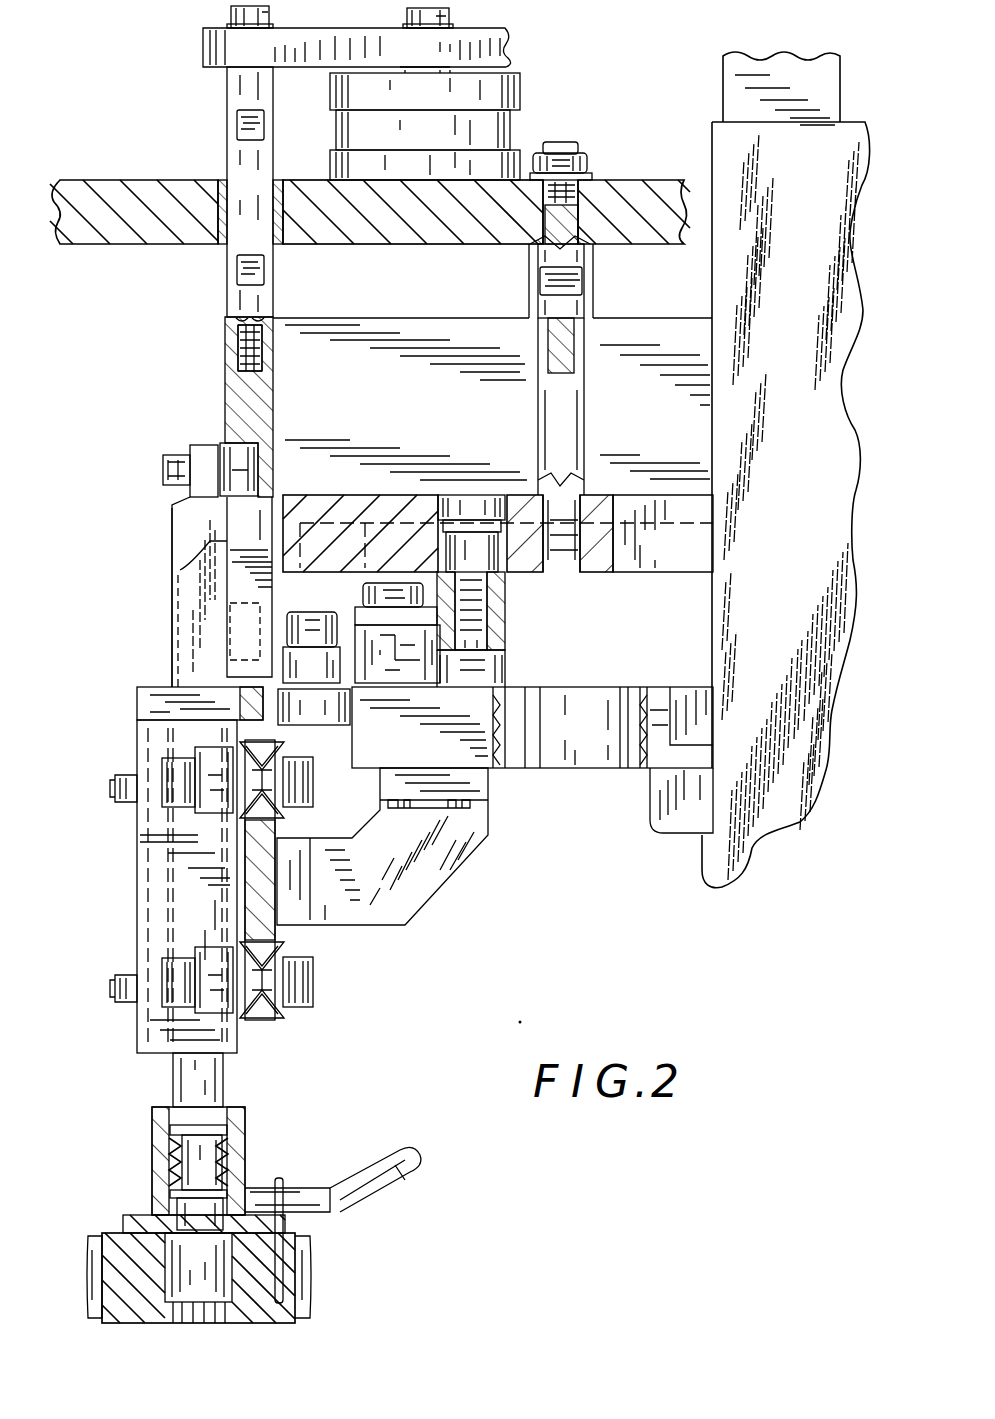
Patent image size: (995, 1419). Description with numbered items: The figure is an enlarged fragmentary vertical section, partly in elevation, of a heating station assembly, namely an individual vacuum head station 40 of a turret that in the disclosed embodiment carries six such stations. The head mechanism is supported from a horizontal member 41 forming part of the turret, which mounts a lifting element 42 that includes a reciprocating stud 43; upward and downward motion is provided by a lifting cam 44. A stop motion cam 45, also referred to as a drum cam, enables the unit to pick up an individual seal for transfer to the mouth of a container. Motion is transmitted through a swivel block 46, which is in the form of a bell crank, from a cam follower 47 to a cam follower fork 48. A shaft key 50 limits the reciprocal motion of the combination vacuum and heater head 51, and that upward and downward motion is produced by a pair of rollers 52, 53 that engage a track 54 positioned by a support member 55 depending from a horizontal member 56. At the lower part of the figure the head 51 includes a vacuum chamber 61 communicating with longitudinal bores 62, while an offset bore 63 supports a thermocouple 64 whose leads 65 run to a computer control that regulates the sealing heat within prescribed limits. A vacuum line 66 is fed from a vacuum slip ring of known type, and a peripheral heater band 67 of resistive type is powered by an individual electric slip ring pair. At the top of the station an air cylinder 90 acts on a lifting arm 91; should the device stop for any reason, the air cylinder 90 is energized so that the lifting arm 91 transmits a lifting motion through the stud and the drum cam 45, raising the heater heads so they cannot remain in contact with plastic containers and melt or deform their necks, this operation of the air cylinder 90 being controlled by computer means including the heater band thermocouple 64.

The vacuum head station 40 is at (516, 42).
The horizontal member 41 is at (640, 200).
The lifting element 42 is at (180, 572).
The reciprocating stud 43 is at (273, 412).
The lifting cam 44 is at (172, 655).
The stop motion cam 45 is at (334, 490).
The swivel block 46 is at (368, 596).
The cam follower 47 is at (492, 500).
The cam follower fork 48 is at (138, 700).
The shaft key 50 is at (140, 902).
The combination vacuum and heater head 51 is at (302, 1263).
The roller 52 is at (285, 752).
The roller 53 is at (290, 1020).
The track 54 is at (277, 838).
The support member 55 is at (442, 875).
The horizontal member 56 is at (656, 782).
The vacuum chamber 61 is at (182, 1266).
The longitudinal bores 62 is at (168, 1316).
The offset bore 63 is at (292, 1295).
The thermocouple 64 is at (280, 1190).
The leads 65 is at (280, 1175).
The vacuum line 66 is at (390, 1188).
The peripheral heater band 67 is at (94, 1226).
The air cylinder 90 is at (508, 135).
The lifting arm 91 is at (324, 32).